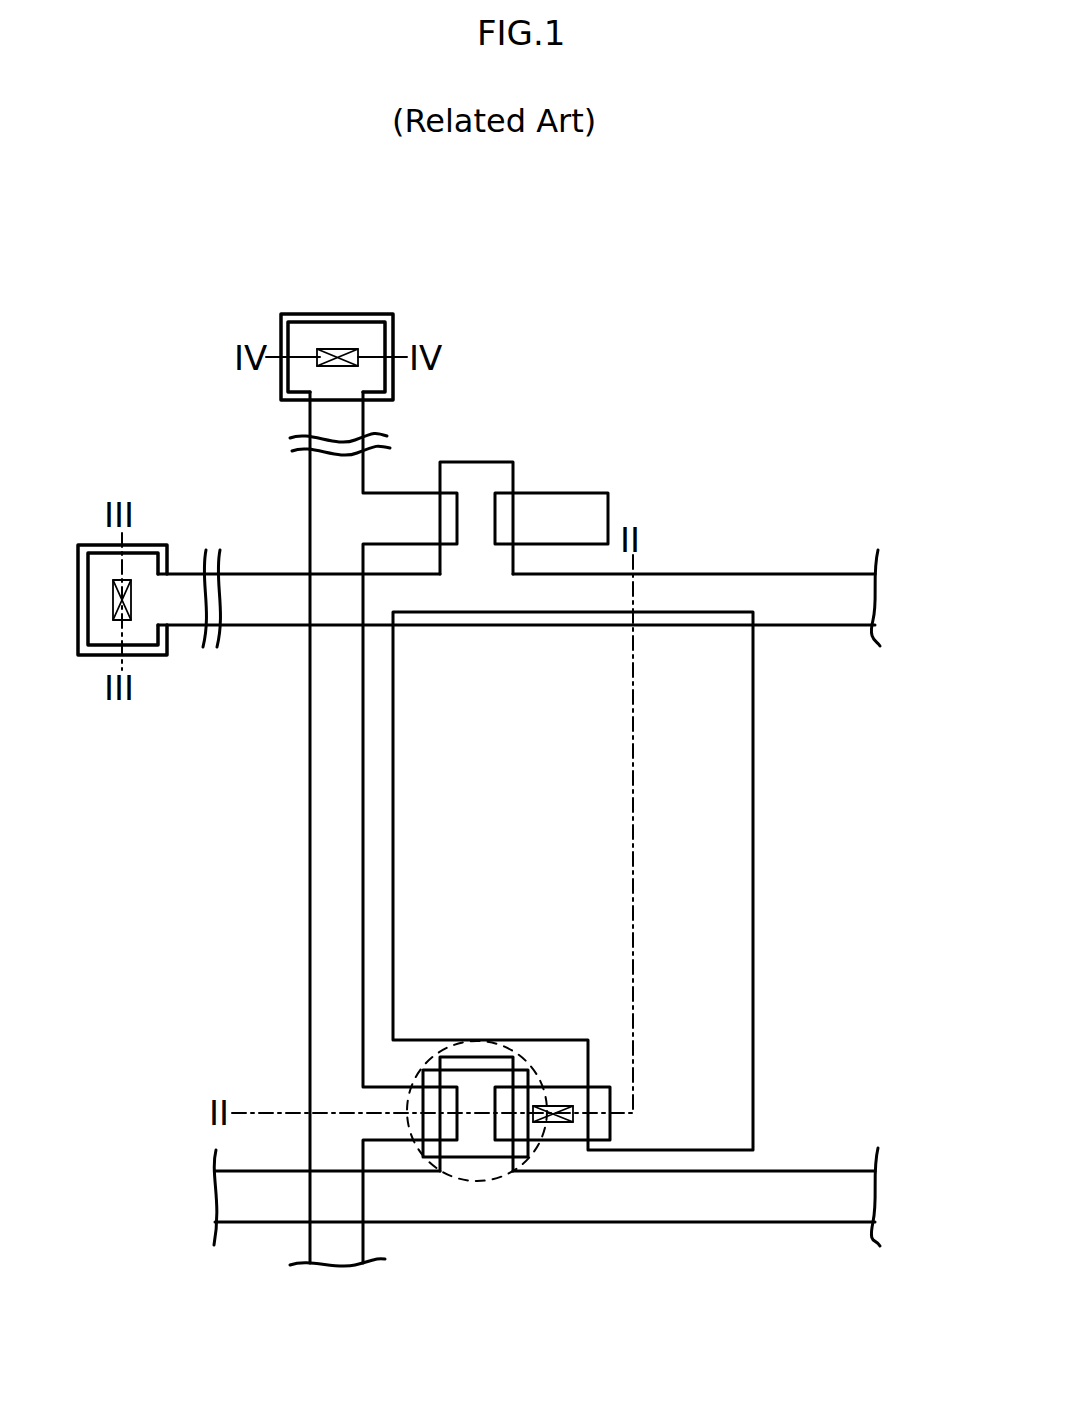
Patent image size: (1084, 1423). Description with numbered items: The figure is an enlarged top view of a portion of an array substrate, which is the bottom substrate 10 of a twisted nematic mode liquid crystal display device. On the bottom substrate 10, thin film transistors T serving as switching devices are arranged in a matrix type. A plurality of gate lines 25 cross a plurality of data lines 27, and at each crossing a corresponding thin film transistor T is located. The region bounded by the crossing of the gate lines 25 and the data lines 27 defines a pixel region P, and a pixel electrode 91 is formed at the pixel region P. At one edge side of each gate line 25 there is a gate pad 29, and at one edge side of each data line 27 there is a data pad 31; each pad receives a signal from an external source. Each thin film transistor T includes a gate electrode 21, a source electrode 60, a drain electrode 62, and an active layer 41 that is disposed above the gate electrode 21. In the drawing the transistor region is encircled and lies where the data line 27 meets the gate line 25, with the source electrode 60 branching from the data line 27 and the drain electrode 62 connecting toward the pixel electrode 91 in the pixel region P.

The bottom substrate 10 is at (866, 455).
The data pad 31 is at (390, 322).
The data line 27 is at (357, 417).
The gate pad 29 is at (162, 545).
The pixel electrode 91 is at (393, 825).
The pixel region P is at (722, 818).
The thin film transistor T is at (505, 1047).
The source electrode 60 is at (413, 1143).
The active layer 41 is at (495, 1150).
The drain electrode 62 is at (547, 1140).
The gate electrode 21 is at (467, 1173).
The gate line 25 is at (260, 1210).